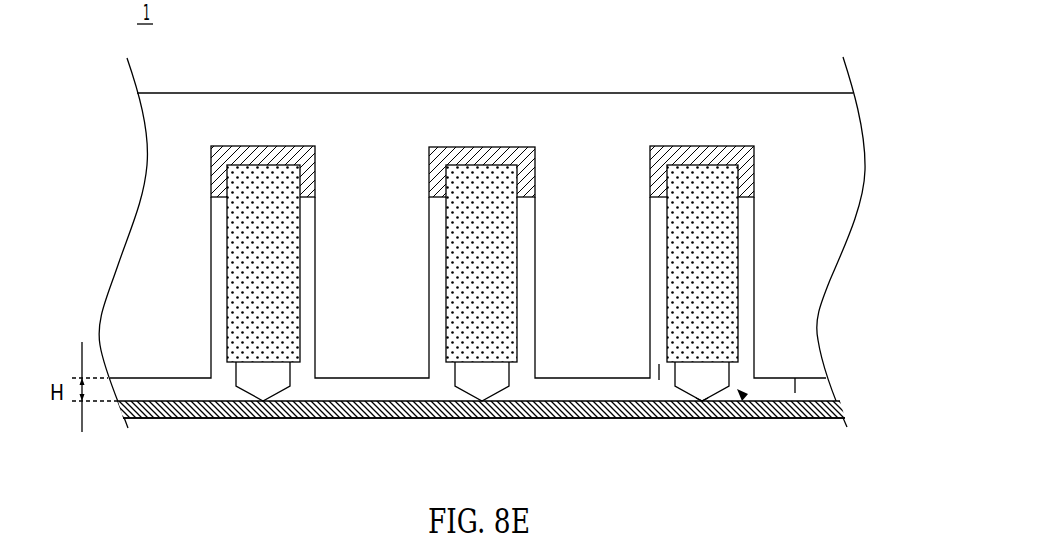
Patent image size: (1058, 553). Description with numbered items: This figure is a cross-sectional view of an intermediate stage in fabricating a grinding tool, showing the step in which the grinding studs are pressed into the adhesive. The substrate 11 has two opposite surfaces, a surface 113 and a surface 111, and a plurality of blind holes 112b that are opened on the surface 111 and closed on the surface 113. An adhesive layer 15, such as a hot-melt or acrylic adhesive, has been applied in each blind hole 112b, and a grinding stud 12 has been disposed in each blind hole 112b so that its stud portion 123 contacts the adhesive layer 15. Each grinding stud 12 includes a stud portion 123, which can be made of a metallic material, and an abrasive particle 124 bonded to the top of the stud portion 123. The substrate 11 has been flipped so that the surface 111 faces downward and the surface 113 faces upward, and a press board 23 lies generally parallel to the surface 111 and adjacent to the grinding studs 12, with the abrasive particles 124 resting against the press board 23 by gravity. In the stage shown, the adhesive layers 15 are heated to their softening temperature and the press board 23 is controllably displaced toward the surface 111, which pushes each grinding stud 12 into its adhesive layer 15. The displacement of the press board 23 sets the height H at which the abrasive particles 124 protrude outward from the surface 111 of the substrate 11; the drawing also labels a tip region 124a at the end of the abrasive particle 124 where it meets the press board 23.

The substrate 11 is at (838, 117).
The surface of substrate 113 is at (795, 82).
The surface of substrate 111 is at (805, 418).
The blind hole 112b is at (659, 380).
The grinding stud 12 is at (745, 400).
The adhesive layer 15 is at (752, 188).
The press board 23 is at (832, 410).
The stud portion 123 is at (718, 317).
The abrasive particle 124 is at (722, 422).
The tip end of conductive pillar 124a is at (702, 418).